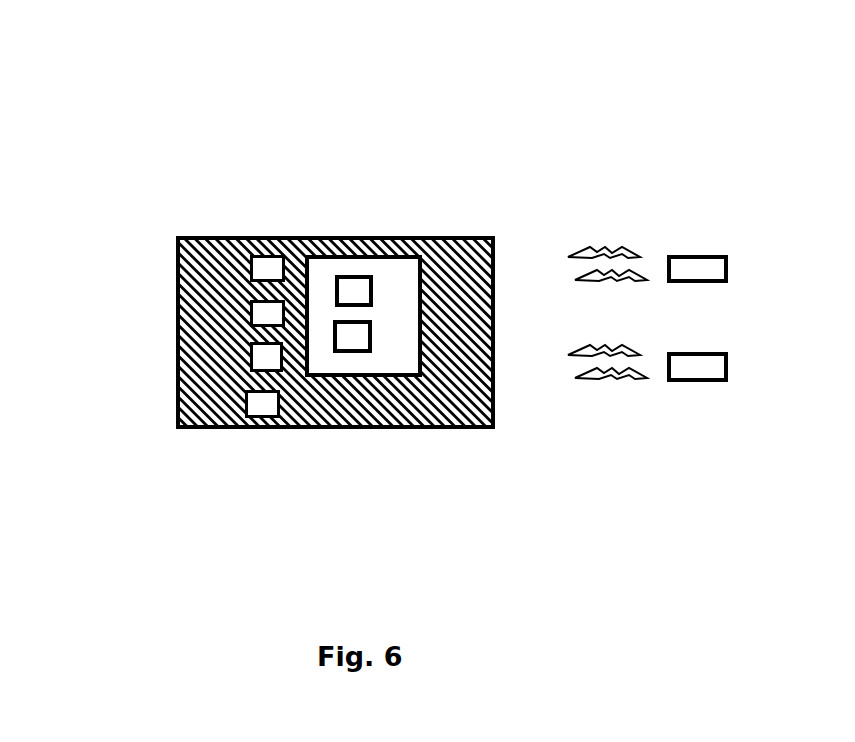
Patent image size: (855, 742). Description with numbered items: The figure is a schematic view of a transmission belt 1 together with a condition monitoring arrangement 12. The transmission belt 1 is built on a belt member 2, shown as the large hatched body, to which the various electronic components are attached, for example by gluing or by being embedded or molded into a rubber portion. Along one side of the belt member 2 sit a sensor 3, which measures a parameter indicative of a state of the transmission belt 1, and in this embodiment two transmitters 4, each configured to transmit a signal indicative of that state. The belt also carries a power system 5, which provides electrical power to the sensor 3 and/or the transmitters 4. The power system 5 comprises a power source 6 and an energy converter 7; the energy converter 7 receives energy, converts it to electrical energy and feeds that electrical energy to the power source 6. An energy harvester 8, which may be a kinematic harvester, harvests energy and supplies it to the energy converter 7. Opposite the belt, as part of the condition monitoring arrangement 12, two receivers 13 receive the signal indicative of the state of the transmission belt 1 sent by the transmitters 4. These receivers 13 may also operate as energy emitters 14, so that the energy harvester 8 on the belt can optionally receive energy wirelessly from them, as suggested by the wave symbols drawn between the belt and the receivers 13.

The transmission belt 1 is at (374, 182).
The belt member 2 is at (177, 248).
The sensor 3 is at (268, 277).
The transmitter 4 is at (262, 318).
The power system 5 is at (358, 365).
The power source 6 is at (360, 298).
The energy converter 7 is at (362, 348).
The energy harvester 8 is at (252, 408).
The condition monitoring arrangement 12 is at (609, 116).
The receiver 13 is at (682, 270).
The energy emitter 14 is at (700, 368).